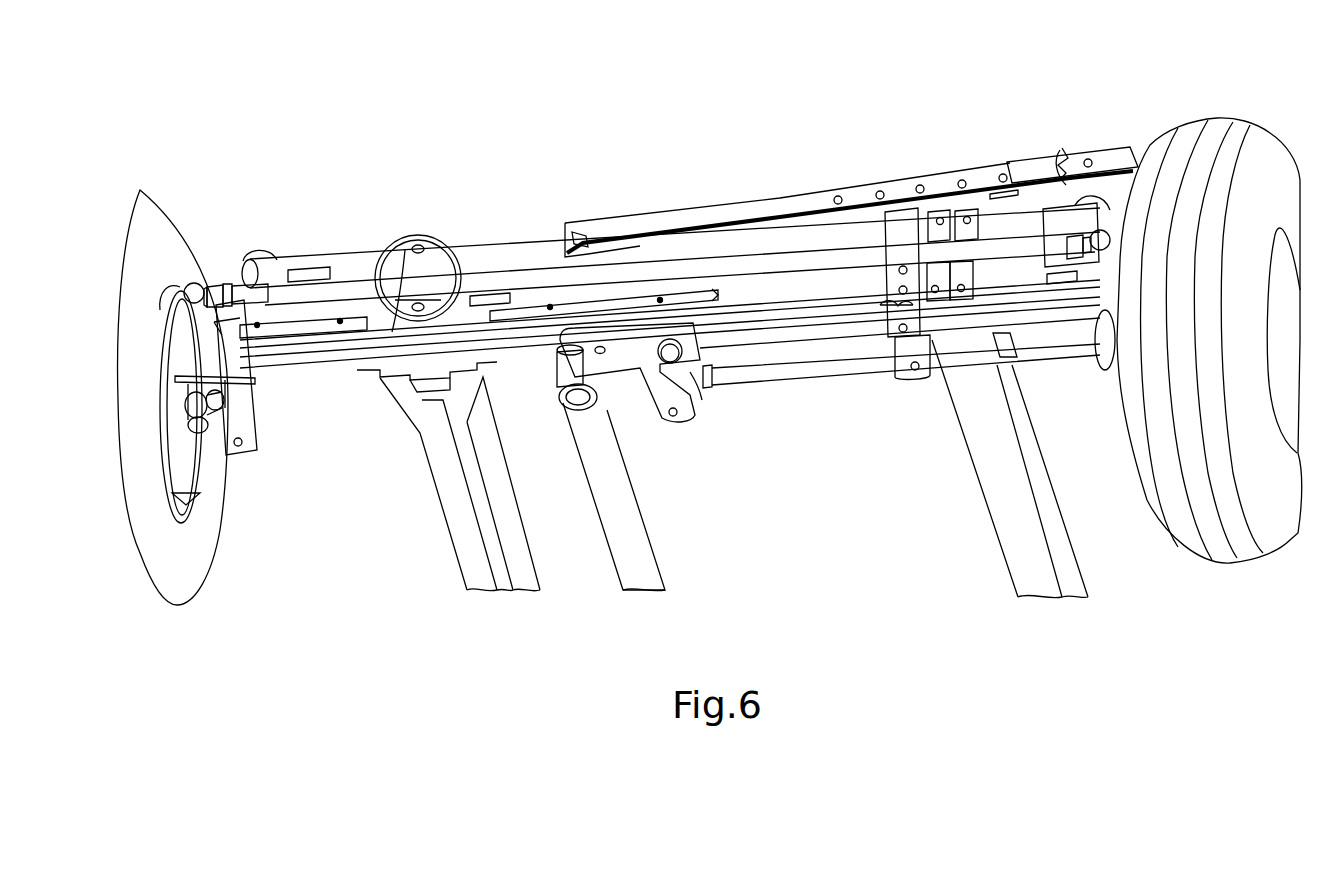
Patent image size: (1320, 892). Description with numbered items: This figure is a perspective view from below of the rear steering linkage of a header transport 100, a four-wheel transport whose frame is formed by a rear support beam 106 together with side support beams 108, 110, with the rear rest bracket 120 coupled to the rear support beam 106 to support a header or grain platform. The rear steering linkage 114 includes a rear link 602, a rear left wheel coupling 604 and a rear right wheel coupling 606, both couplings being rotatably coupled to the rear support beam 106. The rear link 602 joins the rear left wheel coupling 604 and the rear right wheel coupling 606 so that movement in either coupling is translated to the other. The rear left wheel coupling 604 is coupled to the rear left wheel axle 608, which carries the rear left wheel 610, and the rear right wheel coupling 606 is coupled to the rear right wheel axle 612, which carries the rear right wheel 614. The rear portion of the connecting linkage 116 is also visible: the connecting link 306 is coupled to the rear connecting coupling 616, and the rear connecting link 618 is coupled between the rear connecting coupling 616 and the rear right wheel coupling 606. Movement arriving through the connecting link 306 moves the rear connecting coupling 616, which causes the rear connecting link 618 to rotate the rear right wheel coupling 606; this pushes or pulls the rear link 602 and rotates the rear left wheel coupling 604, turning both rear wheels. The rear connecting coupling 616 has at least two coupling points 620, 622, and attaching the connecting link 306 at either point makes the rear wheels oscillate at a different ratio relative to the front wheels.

The header transport 100 is at (488, 82).
The rear support beam 106 is at (375, 240).
The side support beam 108 is at (1020, 552).
The side support beam 110 is at (473, 540).
The rear steering linkage 114 is at (648, 237).
The connecting linkage 116 is at (702, 453).
The rear rest bracket 120 is at (858, 192).
The connecting link 306 is at (635, 540).
The rear link 602 is at (517, 272).
The rear left wheel coupling 604 is at (220, 325).
The rear right wheel coupling 606 is at (1046, 258).
The rear left wheel axle 608 is at (232, 406).
The rear left wheel 610 is at (220, 517).
The rear right wheel axle 612 is at (1099, 362).
The rear right wheel 614 is at (1154, 487).
The rear connecting coupling 616 is at (690, 400).
The rear connecting link 618 is at (889, 372).
The coupling point 620 is at (608, 366).
The coupling point 622 is at (552, 348).